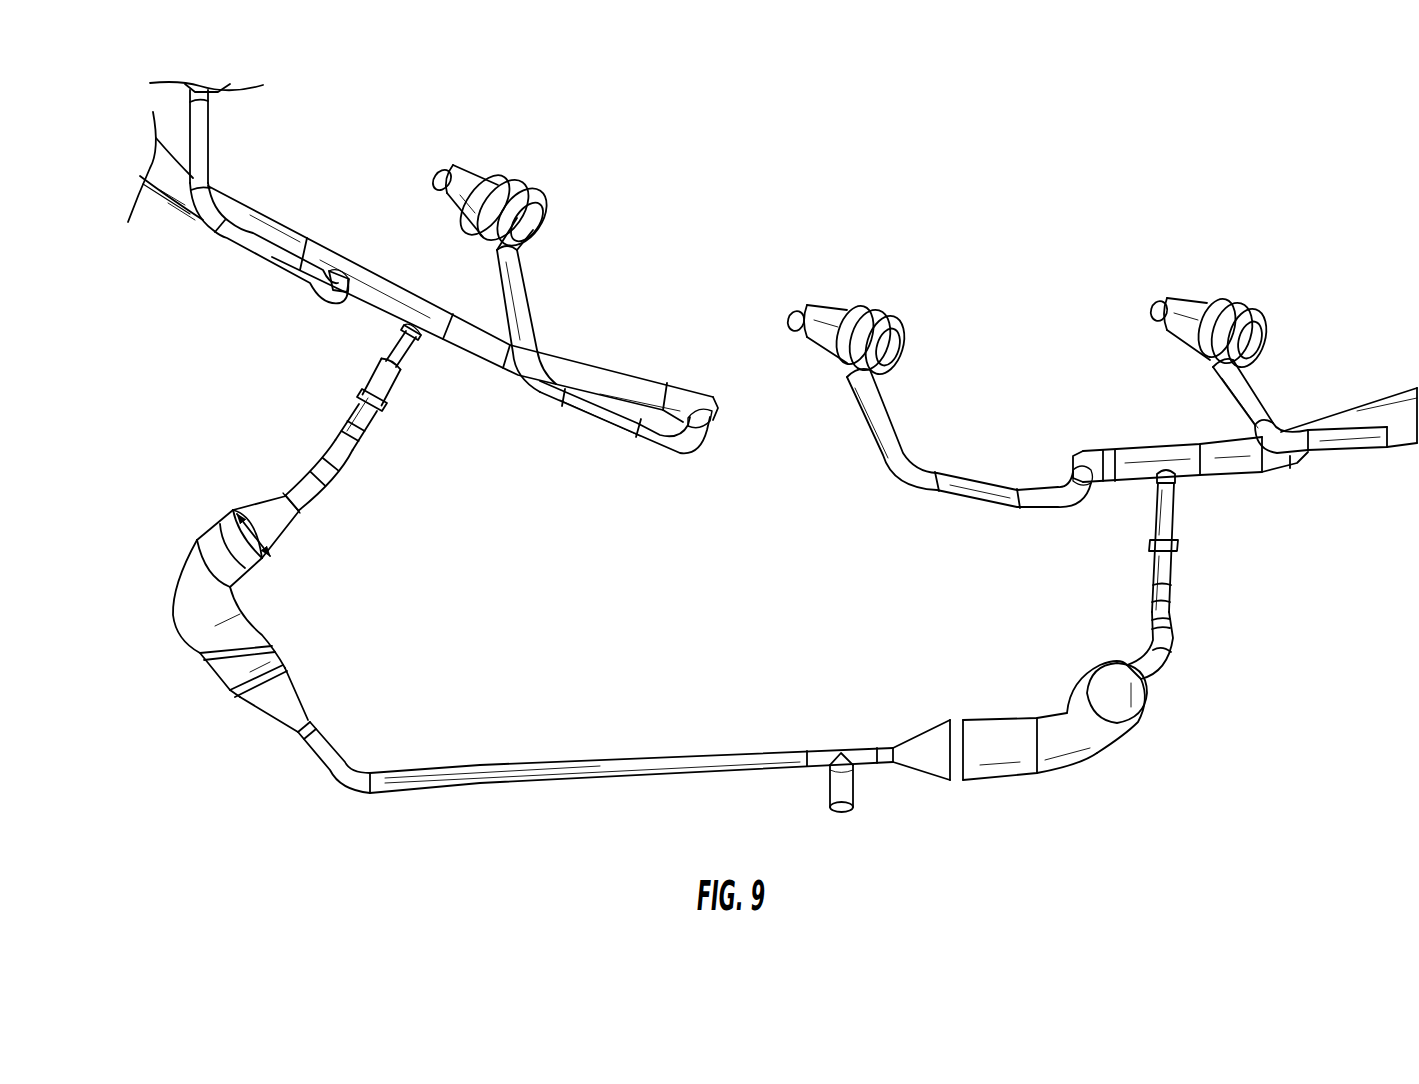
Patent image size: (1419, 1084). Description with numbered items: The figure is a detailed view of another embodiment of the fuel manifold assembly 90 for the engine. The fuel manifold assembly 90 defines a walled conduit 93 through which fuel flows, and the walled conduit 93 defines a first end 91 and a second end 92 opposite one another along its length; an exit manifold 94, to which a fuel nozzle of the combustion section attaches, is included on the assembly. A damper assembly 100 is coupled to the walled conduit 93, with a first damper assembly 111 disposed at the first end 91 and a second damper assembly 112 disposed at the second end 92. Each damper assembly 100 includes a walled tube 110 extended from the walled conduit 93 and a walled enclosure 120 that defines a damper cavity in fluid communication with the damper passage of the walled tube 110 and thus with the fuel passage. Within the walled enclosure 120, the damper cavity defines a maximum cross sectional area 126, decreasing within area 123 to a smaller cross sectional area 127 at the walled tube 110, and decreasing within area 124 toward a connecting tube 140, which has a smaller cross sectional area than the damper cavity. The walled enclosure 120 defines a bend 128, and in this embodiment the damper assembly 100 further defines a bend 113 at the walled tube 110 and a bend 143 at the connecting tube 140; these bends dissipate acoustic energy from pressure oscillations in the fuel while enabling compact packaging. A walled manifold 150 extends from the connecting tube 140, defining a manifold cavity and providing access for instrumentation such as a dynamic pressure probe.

The fuel manifold assembly 90 is at (858, 162).
The first end 91 is at (1083, 349).
The second end 92 is at (392, 230).
The walled conduit 93 is at (630, 390).
The exit manifold 94 is at (512, 228).
The damper assembly 100 is at (245, 372).
The walled tube 110 is at (410, 355).
The first damper assembly 111 is at (1228, 598).
The second damper assembly 112 is at (220, 419).
The bend 113 is at (312, 458).
The walled enclosure 120 is at (223, 622).
The area 123 is at (285, 494).
The area 124 is at (320, 702).
The maximum cross sectional area 126 is at (236, 548).
The cross sectional area 127 is at (300, 519).
The bend 128 is at (241, 593).
The connecting tube 140 is at (562, 775).
The bend 143 is at (354, 766).
The walled manifold 150 is at (838, 785).